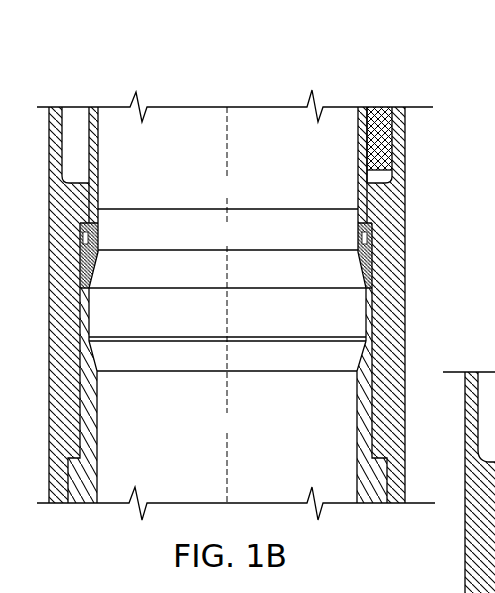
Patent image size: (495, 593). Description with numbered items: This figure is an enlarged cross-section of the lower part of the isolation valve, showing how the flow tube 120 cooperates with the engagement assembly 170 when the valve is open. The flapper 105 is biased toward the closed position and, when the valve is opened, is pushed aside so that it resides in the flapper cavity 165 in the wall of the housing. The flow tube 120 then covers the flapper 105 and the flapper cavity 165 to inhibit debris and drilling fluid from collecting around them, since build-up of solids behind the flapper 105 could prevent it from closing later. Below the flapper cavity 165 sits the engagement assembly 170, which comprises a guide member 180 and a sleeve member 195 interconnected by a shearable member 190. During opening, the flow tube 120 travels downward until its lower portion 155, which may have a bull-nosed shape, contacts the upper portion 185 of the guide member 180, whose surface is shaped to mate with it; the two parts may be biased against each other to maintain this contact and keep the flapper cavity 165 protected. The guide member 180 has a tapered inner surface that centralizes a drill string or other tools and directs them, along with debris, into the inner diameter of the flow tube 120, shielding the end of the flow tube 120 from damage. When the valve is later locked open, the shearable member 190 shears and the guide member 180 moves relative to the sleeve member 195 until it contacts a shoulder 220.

The flapper 105 is at (370, 107).
The flow tube 120 is at (358, 148).
The lower portion 155 is at (366, 196).
The flapper cavity 165 is at (77, 123).
The engagement assembly 170 is at (98, 247).
The guide member 180 is at (374, 262).
The upper portion 185 is at (368, 218).
The shearable member 190 is at (372, 236).
The sleeve member 195 is at (378, 300).
The shoulder 220 is at (370, 340).